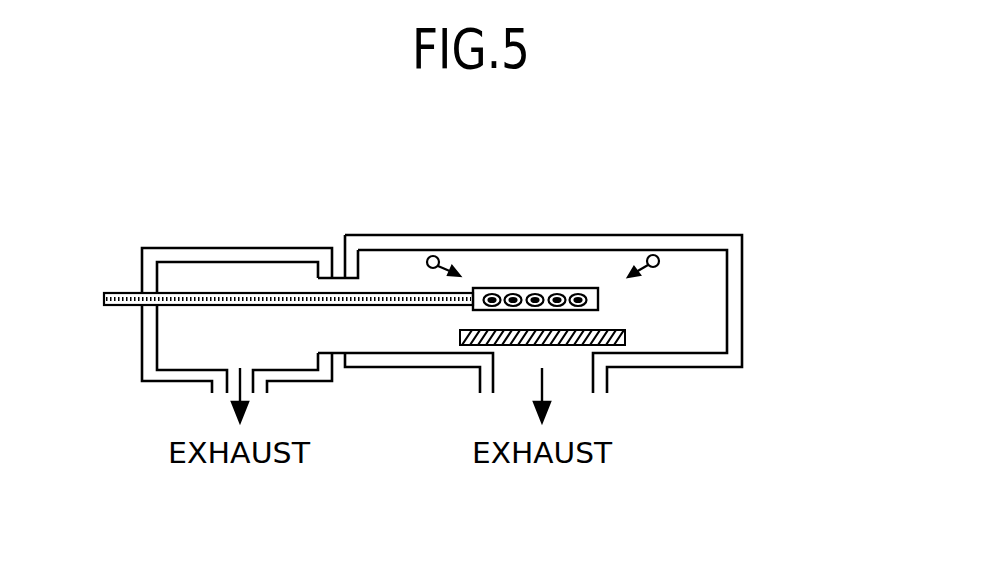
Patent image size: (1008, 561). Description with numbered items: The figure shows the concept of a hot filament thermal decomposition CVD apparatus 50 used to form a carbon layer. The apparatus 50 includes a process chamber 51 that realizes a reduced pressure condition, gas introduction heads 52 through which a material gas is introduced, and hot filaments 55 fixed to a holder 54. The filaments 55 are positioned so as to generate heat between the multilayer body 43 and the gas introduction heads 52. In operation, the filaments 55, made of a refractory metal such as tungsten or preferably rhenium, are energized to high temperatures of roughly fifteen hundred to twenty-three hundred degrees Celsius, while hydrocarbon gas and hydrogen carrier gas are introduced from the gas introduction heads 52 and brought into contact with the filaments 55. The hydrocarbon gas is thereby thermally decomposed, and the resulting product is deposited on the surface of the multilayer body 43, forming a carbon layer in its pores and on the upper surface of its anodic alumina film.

The hot filament CVD apparatus 50 is at (185, 197).
The process chamber 51 is at (742, 306).
The gas introduction heads 52 is at (439, 260).
The holder 54 is at (598, 296).
The hot filaments 55 is at (557, 294).
The multilayer body 43 is at (625, 336).